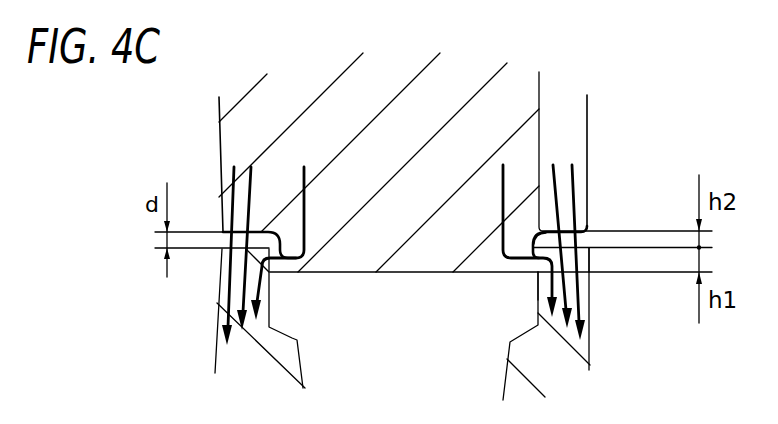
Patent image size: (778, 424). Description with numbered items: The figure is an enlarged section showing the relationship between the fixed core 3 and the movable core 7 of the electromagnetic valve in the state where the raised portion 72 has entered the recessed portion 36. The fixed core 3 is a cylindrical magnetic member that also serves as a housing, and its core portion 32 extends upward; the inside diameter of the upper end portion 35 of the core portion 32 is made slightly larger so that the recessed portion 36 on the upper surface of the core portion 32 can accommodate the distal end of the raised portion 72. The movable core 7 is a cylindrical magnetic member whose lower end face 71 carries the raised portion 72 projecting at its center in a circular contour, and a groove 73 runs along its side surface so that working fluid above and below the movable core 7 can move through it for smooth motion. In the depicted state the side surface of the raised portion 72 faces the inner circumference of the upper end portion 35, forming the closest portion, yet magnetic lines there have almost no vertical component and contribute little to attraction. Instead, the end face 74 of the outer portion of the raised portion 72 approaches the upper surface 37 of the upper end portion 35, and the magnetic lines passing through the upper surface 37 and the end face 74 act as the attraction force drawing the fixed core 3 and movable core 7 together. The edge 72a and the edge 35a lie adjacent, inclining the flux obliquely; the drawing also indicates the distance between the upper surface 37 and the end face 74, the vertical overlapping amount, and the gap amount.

The movable core 7 is at (572, 77).
The lower end face 71 is at (386, 268).
The raised portion 72 is at (325, 258).
The edge 72a is at (537, 283).
The groove 73 is at (572, 124).
The end face 74 is at (588, 207).
The fixed core 3 is at (609, 350).
The core portion 32 is at (607, 324).
The upper end portion 35 is at (587, 294).
The edge 35a is at (547, 236).
The recessed portion 36 is at (270, 302).
The upper surface 37 is at (591, 254).